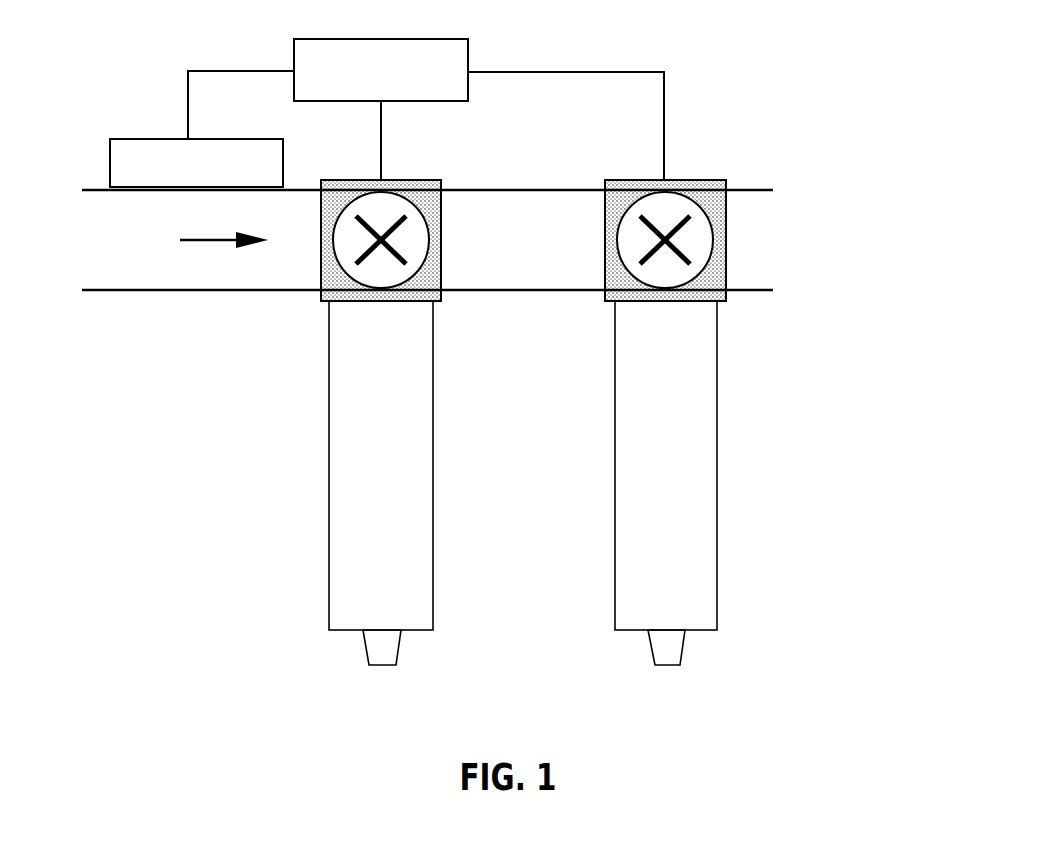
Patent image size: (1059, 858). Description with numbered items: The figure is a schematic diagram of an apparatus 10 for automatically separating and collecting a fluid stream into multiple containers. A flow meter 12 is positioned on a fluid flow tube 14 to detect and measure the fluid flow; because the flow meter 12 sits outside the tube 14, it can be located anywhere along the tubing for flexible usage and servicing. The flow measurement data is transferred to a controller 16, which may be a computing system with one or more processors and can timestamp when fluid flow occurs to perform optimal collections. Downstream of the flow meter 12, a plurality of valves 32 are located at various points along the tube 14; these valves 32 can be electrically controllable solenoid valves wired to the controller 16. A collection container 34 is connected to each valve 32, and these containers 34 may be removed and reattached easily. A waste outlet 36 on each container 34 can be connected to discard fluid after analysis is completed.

The apparatus 10 is at (712, 40).
The flow meter 12 is at (140, 139).
The fluid flow tube 14 is at (527, 188).
The controller 16 is at (468, 57).
The valves 32 is at (423, 179).
The collection container 34 is at (395, 456).
The waste outlet 36 is at (401, 647).